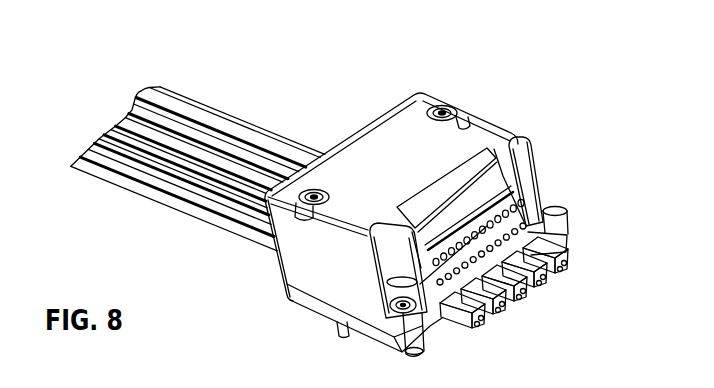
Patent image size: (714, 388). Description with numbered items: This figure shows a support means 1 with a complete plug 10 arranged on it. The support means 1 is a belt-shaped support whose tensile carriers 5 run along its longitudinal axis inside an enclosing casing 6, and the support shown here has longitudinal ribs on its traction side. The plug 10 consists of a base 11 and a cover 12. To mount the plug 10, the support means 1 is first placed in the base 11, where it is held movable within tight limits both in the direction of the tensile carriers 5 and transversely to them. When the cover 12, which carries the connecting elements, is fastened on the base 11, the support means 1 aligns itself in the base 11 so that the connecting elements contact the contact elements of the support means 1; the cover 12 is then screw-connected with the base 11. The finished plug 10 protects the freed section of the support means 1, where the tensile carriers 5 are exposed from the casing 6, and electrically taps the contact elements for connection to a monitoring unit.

The support means 1 is at (225, 85).
The tensile carriers 5 is at (552, 275).
The casing 6 is at (220, 210).
The plug 10 is at (512, 90).
The base 11 is at (328, 310).
The cover 12 is at (386, 148).